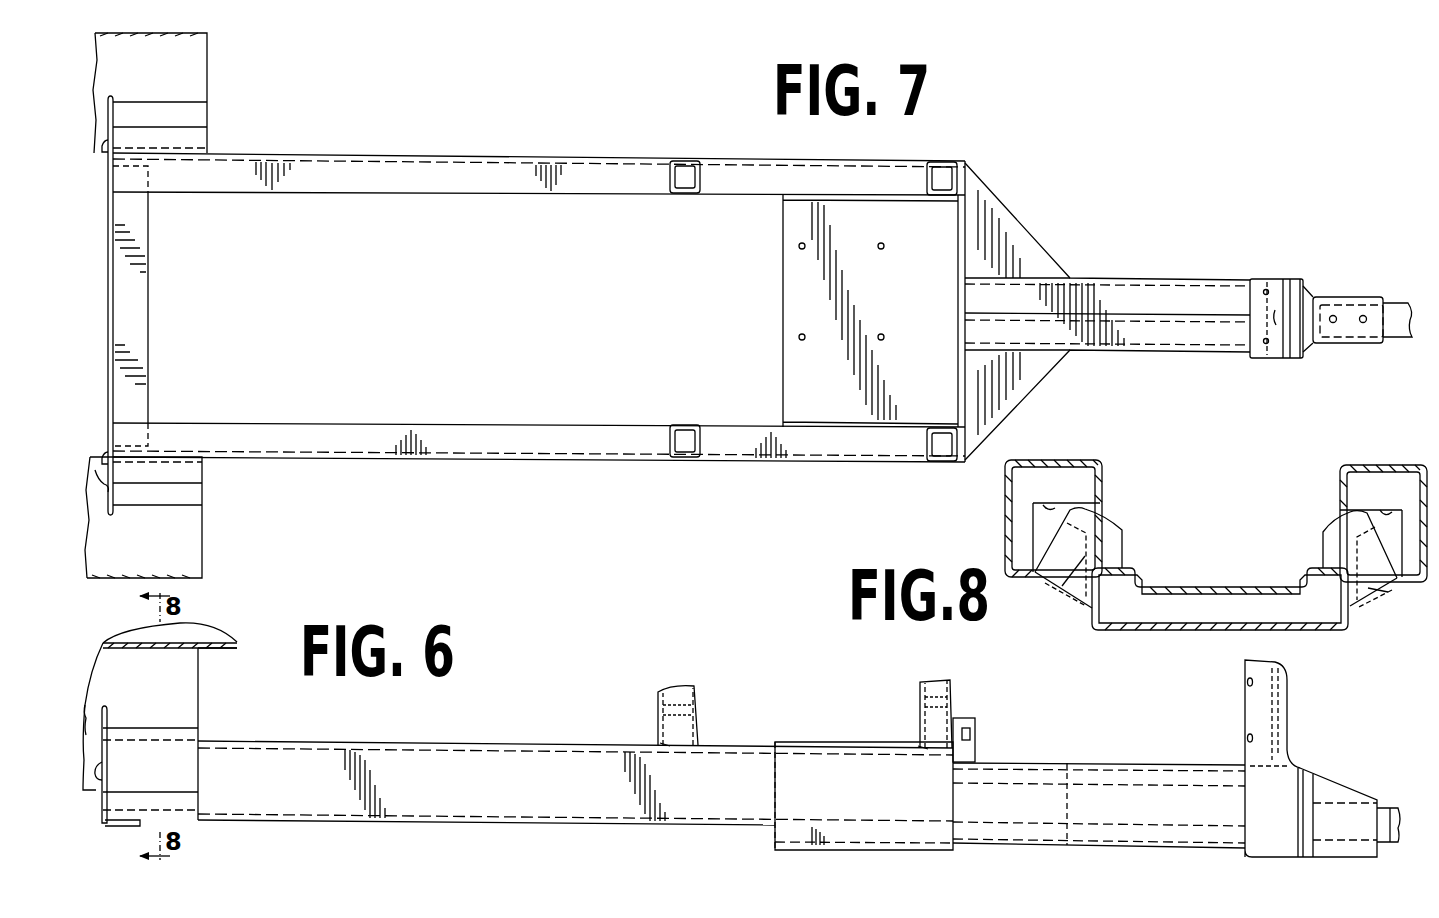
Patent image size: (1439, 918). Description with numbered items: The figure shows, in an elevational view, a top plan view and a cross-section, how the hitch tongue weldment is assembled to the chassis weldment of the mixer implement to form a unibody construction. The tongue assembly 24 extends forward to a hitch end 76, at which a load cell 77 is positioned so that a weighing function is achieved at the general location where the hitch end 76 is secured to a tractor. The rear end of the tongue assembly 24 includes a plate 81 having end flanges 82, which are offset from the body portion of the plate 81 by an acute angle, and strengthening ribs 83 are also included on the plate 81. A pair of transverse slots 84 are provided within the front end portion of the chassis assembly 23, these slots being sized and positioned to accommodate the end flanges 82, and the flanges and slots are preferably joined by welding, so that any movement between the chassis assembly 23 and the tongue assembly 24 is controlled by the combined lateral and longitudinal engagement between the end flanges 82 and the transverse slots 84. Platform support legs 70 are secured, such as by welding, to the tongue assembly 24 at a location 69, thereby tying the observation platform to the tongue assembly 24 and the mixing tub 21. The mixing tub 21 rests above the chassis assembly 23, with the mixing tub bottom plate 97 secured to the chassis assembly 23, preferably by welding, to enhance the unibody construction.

In FIG. 6, the mixing tub 21 is at (213, 619).
In FIG. 7, the chassis assembly 23 is at (212, 96).
In FIG. 6, the chassis assembly 23 is at (204, 731).
In FIG. 7, the tongue assembly 24 is at (1012, 208).
In FIG. 6, the tongue assembly 24 is at (760, 720).
In FIG. 6, the location 69 is at (668, 740).
In FIG. 7, the platform support legs 70 is at (700, 180).
In FIG. 6, the platform support legs 70 is at (698, 700).
In FIG. 7, the hitch end 76 is at (1275, 358).
In FIG. 6, the hitch end 76 is at (1272, 780).
In FIG. 7, the load cell 77 is at (1402, 335).
In FIG. 6, the load cell 77 is at (1345, 822).
In FIG. 7, the plate 81 is at (106, 272).
In FIG. 7, the end flanges 82 is at (103, 152).
In FIG. 8, the end flanges 82 is at (1103, 545).
In FIG. 6, the end flanges 82 is at (97, 773).
In FIG. 8, the strengthening ribs 83 is at (1062, 586).
In FIG. 8, the transverse slots 84 is at (1043, 505).
In FIG. 6, the transverse slots 84 is at (102, 712).
In FIG. 6, the mixing tub bottom plate 97 is at (220, 650).